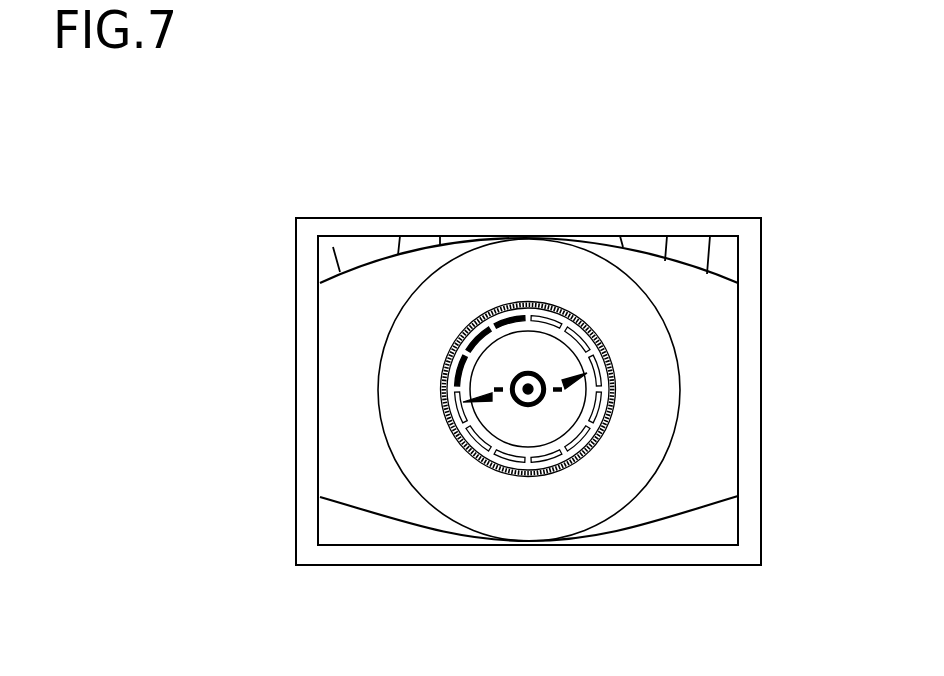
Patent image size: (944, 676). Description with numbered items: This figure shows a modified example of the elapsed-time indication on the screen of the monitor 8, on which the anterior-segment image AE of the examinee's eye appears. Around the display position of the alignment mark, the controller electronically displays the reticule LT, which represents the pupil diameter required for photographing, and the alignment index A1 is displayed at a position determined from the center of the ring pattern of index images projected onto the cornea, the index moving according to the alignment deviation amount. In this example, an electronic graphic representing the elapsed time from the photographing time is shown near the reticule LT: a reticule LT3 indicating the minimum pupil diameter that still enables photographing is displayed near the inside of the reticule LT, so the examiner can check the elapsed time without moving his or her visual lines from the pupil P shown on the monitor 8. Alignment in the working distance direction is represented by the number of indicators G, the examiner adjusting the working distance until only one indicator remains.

The monitor 8 is at (320, 217).
The anterior-segment image AE is at (390, 453).
The pupil P is at (617, 404).
The reticule LT is at (462, 416).
The reticule indicating a minimum pupil diameter LT3 is at (510, 318).
The alignment index A1 is at (535, 383).
The indicators G is at (460, 403).